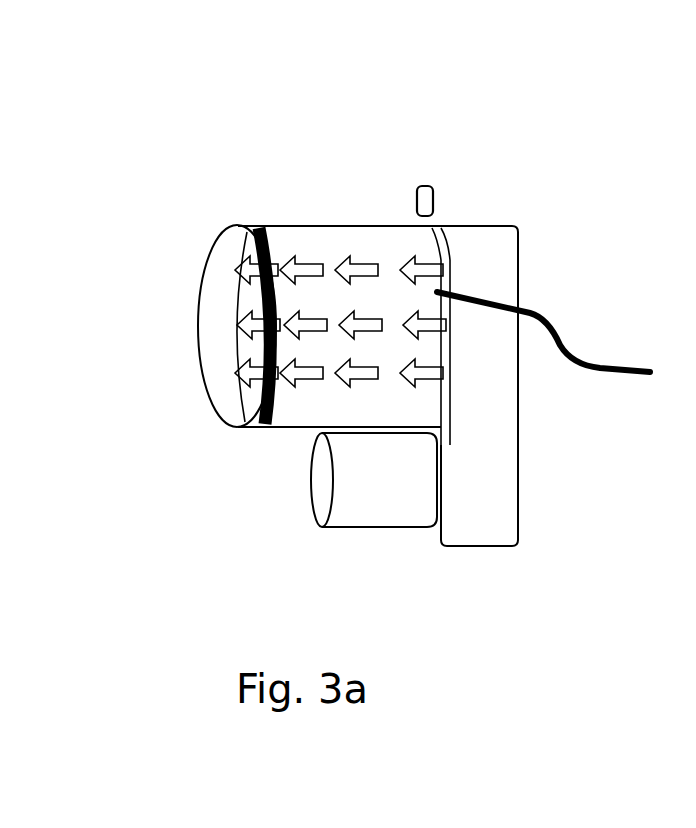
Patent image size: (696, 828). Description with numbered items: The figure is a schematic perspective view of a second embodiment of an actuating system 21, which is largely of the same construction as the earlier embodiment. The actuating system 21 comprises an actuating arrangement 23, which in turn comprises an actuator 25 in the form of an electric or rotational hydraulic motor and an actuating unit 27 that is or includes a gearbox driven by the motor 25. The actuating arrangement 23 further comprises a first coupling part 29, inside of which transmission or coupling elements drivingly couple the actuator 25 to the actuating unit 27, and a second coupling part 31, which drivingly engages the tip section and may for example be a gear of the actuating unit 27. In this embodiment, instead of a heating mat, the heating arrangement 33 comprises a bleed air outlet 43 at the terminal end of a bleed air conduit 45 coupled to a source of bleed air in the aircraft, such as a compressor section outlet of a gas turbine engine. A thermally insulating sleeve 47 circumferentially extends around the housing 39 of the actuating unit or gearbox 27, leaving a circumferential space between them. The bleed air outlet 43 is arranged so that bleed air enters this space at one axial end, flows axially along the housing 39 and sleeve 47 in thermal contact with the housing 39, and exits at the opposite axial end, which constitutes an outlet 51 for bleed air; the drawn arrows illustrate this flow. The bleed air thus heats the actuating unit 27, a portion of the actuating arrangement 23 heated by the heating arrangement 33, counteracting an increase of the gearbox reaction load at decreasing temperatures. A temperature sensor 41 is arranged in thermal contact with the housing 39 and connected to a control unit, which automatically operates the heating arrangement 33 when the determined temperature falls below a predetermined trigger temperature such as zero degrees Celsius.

The actuating system 21 is at (446, 113).
The actuating arrangement 23 is at (200, 440).
The actuator 25 is at (378, 505).
The actuating unit 27 is at (405, 262).
The first coupling part 29 is at (490, 517).
The second coupling part 31 is at (174, 357).
The heating arrangement 33 is at (302, 184).
The housing 39 is at (216, 222).
The temperature sensor 41 is at (434, 196).
The bleed air outlet 43 is at (440, 293).
The bleed air conduit 45 is at (633, 367).
The thermally insulating sleeve 47 is at (354, 222).
The outlet 51 is at (257, 423).